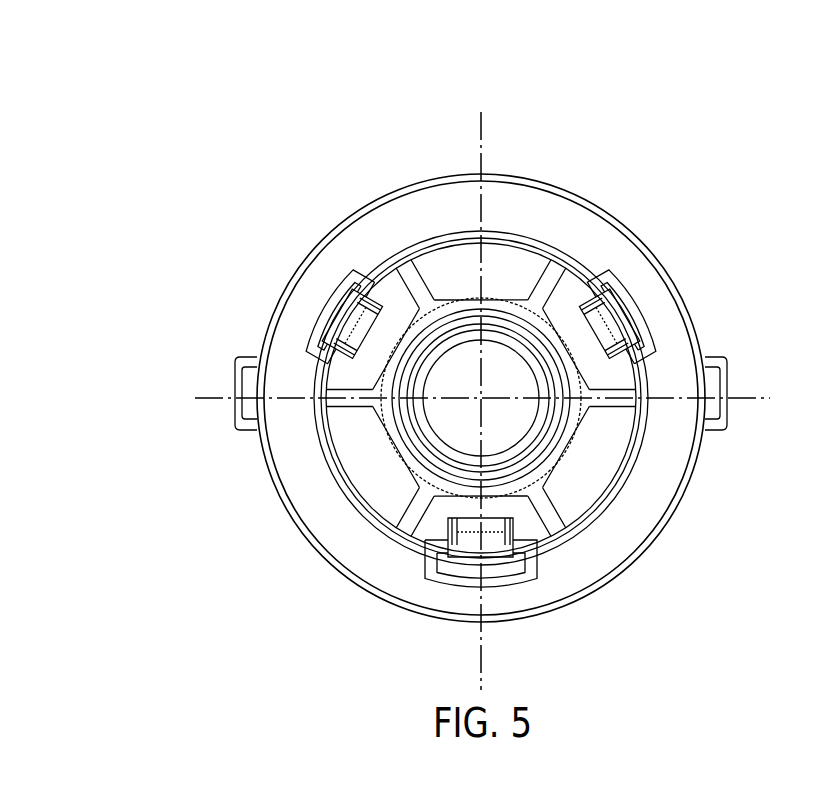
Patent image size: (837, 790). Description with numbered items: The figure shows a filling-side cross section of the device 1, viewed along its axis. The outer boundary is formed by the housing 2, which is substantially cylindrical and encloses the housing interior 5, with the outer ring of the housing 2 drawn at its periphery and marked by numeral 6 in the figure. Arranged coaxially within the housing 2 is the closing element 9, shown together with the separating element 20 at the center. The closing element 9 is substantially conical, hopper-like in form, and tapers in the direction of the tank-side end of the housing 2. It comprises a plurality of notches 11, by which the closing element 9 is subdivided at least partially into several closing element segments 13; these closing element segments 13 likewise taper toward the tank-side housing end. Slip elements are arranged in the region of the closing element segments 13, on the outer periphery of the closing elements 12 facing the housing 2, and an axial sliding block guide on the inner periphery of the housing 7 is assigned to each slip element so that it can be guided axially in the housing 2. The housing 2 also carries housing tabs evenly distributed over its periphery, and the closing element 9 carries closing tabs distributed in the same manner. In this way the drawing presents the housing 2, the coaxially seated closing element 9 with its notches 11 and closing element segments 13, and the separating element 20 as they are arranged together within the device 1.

The device 1 is at (190, 102).
The housing 2 is at (562, 228).
The housing interior 5 is at (405, 330).
The outer rim 6 is at (645, 242).
The inner periphery of the housing 7 is at (625, 458).
The closing element 9 is at (385, 398).
The notches 11 is at (548, 515).
The closing elements 12 is at (585, 508).
The closing element segments 13 is at (385, 398).
The separating element 20 is at (495, 372).